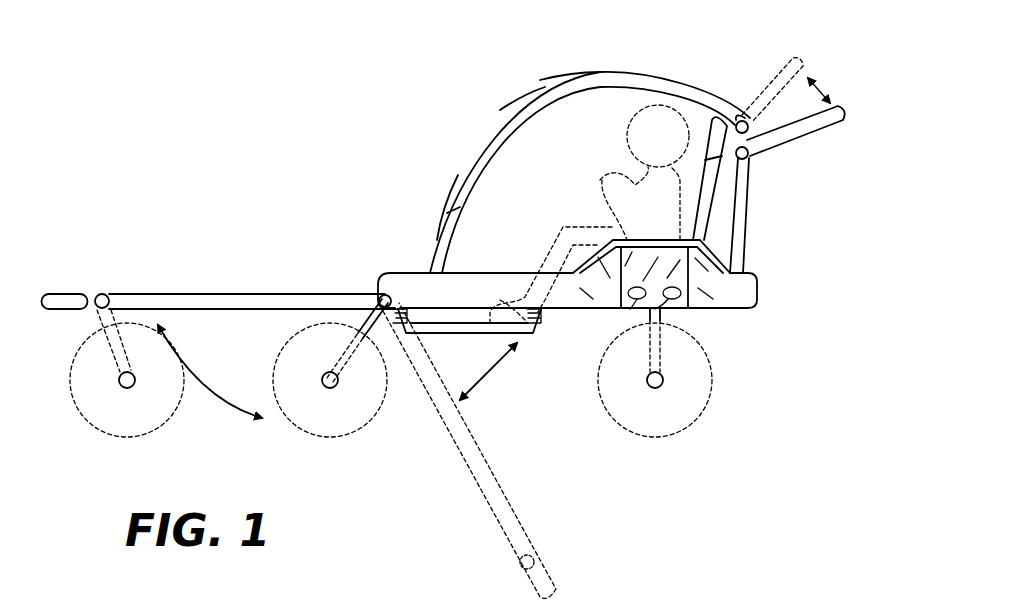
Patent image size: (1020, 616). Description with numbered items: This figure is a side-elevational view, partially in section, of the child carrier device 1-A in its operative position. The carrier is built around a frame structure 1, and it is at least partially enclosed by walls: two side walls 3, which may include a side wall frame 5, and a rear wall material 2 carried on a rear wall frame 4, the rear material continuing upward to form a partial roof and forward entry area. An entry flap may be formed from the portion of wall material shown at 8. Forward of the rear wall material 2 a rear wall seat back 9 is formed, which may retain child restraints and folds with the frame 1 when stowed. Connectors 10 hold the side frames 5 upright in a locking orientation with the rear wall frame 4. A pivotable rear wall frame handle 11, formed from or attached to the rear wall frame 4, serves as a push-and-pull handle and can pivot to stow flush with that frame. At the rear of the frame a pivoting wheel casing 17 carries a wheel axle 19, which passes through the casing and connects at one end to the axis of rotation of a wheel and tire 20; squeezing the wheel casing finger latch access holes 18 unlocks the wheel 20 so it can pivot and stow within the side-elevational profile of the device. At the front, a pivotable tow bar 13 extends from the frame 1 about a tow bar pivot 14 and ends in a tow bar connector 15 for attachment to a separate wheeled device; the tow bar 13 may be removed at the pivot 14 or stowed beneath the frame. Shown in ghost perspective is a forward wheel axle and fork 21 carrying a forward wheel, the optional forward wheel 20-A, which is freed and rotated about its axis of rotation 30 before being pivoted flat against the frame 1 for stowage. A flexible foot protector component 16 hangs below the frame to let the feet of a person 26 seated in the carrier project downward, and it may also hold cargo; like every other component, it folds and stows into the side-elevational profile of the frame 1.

The frame structure 1 is at (758, 292).
The child carrier device 1-A is at (632, 82).
The rear wall material 2 is at (748, 195).
The side wall 3 is at (531, 125).
The rear wall frame 4 is at (740, 243).
The side wall frame 5 is at (562, 85).
The entry flap material 8 is at (468, 183).
The rear wall seat back 9 is at (712, 115).
The connector 10 is at (743, 124).
The pivotable rear wall frame handle 11 is at (827, 122).
The pivotable tow bar 13 is at (253, 296).
The tow bar pivot 14 is at (386, 300).
The tow bar connector 15 is at (66, 301).
The flexible foot protector component 16 is at (533, 335).
The pivoting wheel casing 17 is at (702, 308).
The wheel casing finger latch access hole 18 is at (640, 312).
The wheel axle 19 is at (660, 313).
The wheel and tire 20 is at (318, 420).
The forward optional wheel 20-A is at (92, 406).
The forward wheel axle and fork 21 is at (362, 314).
The person 26 is at (589, 214).
The axis of rotation 30 is at (340, 382).